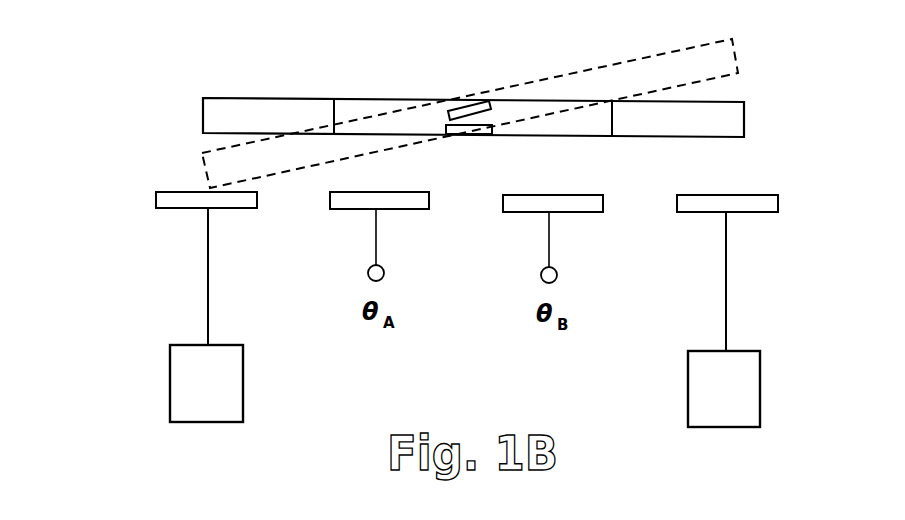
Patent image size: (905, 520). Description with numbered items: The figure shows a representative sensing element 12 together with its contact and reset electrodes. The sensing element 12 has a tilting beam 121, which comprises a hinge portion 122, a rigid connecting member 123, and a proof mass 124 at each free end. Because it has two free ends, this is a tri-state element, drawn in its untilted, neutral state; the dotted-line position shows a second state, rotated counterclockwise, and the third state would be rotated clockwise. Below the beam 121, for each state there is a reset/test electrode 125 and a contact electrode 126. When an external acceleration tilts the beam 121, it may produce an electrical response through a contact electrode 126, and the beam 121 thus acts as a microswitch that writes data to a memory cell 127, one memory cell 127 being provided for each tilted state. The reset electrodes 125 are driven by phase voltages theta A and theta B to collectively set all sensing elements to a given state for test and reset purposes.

The sensing element 12 is at (150, 58).
The tilting beam 121 is at (203, 117).
The hinge portion 122 is at (475, 148).
The rigid connecting member 123 is at (353, 98).
The proof mass 124 is at (270, 97).
The reset/test electrode 125 is at (343, 209).
The contact electrode 126 is at (192, 210).
The memory cell 127 is at (243, 381).